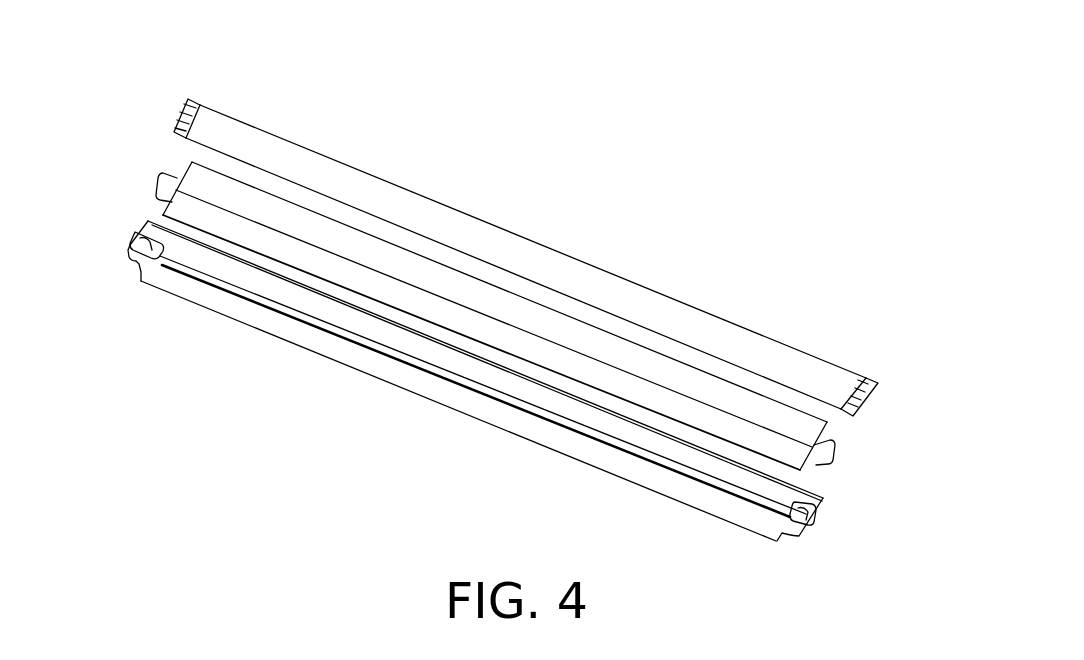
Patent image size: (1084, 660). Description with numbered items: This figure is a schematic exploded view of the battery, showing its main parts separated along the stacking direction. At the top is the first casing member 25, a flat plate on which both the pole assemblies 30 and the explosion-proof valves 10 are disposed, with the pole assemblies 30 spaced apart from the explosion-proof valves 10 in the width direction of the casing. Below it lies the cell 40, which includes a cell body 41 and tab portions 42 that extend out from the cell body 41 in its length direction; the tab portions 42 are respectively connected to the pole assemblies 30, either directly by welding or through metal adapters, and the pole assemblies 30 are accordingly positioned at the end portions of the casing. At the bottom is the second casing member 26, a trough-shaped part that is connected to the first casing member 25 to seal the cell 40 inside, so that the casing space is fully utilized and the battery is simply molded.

The explosion-proof valve 10 is at (204, 104).
The first casing member 25 is at (468, 235).
The second casing member 26 is at (415, 370).
The pole assembly 30 is at (186, 108).
The cell 40 is at (483, 329).
The cell body 41 is at (260, 205).
The tab portion 42 is at (157, 206).